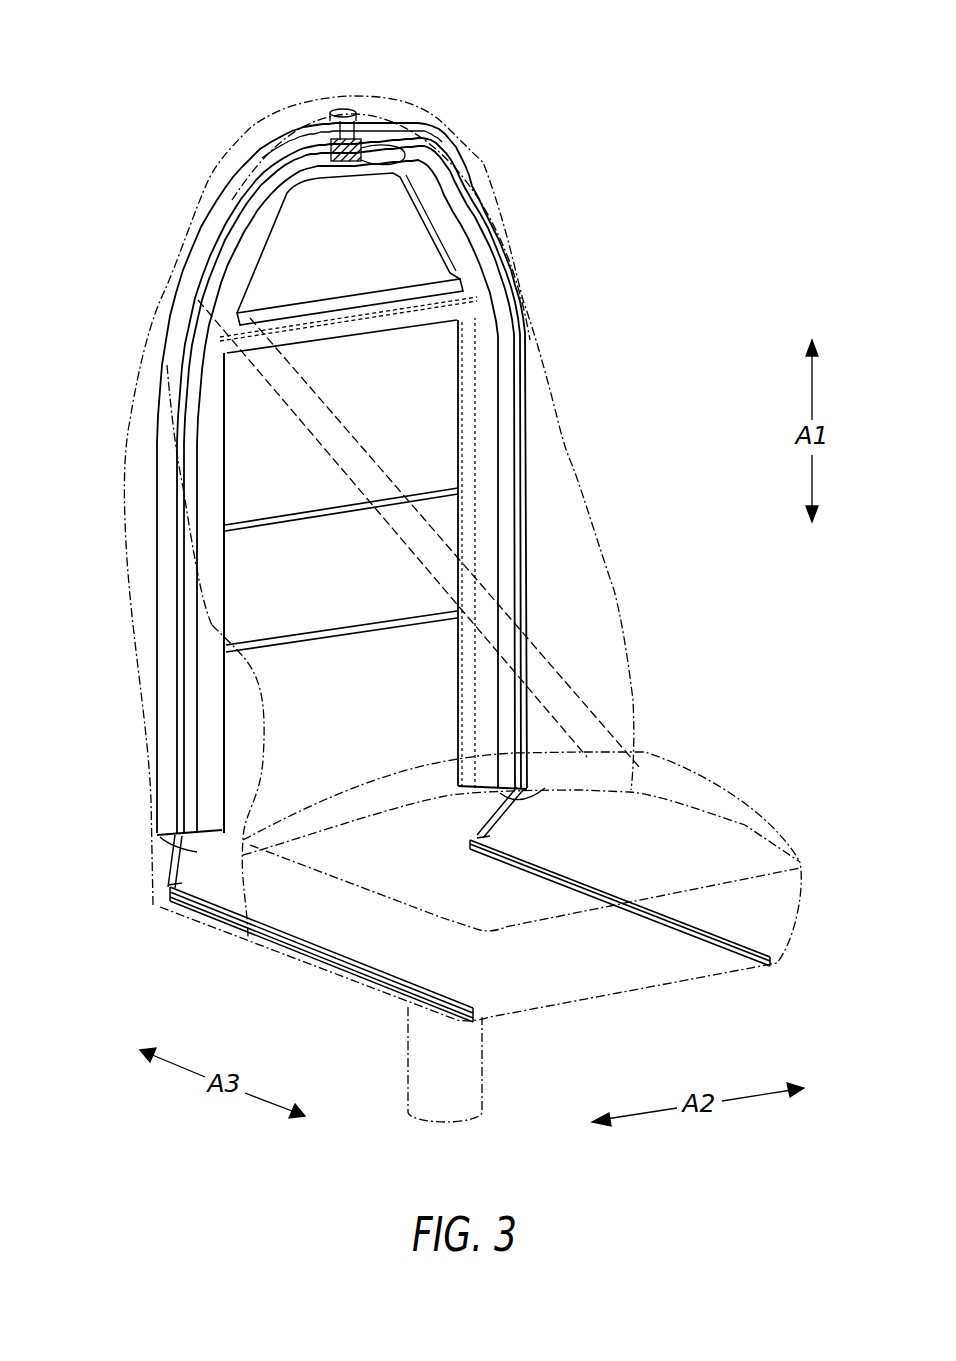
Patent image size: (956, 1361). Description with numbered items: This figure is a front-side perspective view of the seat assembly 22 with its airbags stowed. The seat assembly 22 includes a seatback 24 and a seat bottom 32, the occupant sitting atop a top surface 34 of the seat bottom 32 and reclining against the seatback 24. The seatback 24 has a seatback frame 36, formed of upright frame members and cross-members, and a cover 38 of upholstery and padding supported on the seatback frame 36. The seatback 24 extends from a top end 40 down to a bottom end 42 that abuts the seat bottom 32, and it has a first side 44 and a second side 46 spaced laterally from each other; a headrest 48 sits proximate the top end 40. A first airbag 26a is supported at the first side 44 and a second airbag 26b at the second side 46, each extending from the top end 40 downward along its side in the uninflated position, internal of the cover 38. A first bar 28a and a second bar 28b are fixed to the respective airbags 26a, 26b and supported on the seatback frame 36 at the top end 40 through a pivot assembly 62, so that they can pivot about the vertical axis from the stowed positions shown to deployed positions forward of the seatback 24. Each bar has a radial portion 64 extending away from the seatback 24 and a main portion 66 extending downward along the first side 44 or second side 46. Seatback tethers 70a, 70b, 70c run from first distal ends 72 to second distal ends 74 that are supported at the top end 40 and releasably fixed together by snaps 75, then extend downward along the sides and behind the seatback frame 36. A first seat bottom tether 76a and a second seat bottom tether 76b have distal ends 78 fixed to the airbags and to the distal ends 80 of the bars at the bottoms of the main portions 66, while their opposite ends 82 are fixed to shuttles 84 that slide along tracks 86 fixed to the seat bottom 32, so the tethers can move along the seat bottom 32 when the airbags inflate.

The seat assembly 22 is at (633, 229).
The seatback 24 is at (605, 548).
The first airbag 26a is at (190, 582).
The second airbag 26b is at (473, 218).
The first bar 28a is at (194, 279).
The second bar 28b is at (520, 333).
The seat bottom 32 is at (753, 836).
The top surface 34 is at (703, 835).
The seatback frame 36 is at (477, 427).
The cover 38 is at (268, 109).
The top end 40 is at (335, 100).
The bottom end 42 is at (162, 905).
The first side 44 is at (142, 592).
The second side 46 is at (625, 617).
The headrest 48 is at (200, 210).
The pivot assembly 62 is at (345, 108).
The radial portion 64 is at (300, 118).
The main portion 66 is at (525, 501).
The seatback tether 70a is at (399, 322).
The seatback tether 70b is at (320, 529).
The seatback tether 70c is at (320, 652).
The first distal end 72 is at (333, 148).
The second distal end 74 is at (395, 117).
The snap 75 is at (362, 157).
The first seat bottom tether 76a is at (176, 879).
The second seat bottom tether 76b is at (505, 815).
The distal end 78 is at (513, 792).
The distal end 80 is at (160, 838).
The end 82 is at (177, 888).
The shuttle 84 is at (166, 913).
The track 86 is at (320, 967).